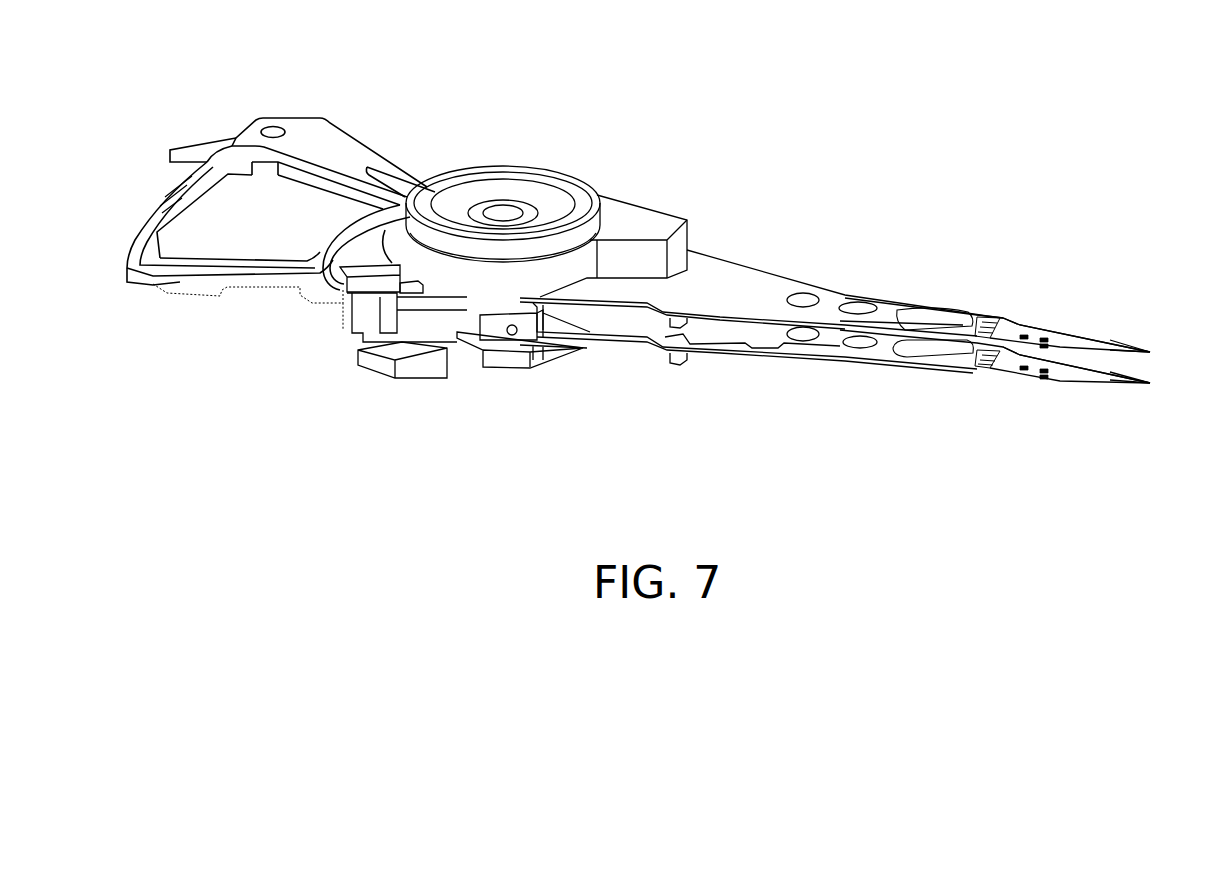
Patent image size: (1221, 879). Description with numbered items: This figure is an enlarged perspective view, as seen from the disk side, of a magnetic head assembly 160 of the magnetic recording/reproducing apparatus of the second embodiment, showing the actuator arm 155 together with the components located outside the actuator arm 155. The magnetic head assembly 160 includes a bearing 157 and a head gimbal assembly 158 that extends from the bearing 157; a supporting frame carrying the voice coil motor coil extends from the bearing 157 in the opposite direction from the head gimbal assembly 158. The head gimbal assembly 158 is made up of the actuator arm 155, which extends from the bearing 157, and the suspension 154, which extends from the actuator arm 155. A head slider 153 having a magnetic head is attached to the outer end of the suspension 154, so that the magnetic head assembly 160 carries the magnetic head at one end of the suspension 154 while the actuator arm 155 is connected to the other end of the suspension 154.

The head slider 153 is at (1107, 345).
The suspension 154 is at (1068, 345).
The actuator arm 155 is at (890, 300).
The bearing 157 is at (520, 138).
The head gimbal assembly 158 is at (828, 260).
The magnetic head assembly 160 is at (658, 266).